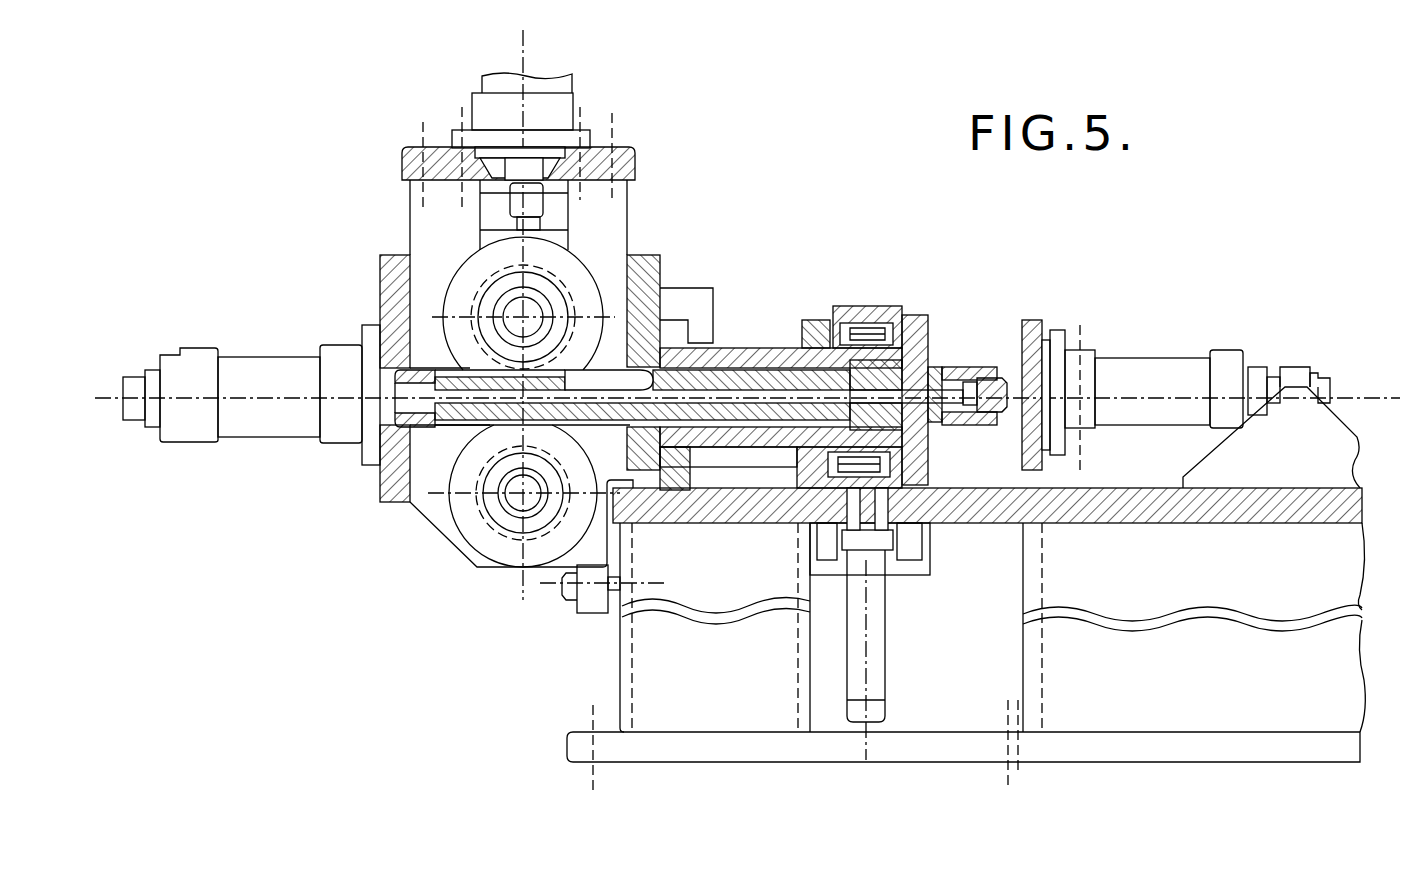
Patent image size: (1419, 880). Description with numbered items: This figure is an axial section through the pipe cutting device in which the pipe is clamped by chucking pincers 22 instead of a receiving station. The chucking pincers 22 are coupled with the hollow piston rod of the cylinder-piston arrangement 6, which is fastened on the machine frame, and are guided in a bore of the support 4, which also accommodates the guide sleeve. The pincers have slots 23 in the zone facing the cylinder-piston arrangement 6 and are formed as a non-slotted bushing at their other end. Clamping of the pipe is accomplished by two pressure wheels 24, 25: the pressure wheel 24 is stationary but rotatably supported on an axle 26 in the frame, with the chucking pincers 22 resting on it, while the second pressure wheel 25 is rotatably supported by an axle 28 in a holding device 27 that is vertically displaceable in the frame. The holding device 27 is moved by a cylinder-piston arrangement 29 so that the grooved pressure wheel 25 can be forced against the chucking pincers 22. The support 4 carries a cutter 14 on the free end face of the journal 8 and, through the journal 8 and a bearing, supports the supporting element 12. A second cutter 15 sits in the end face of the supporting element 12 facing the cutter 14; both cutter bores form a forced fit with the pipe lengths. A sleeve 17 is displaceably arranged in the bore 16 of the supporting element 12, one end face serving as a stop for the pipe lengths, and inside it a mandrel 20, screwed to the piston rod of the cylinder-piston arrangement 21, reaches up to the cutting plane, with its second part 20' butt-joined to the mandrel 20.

The support 4 is at (783, 348).
The cylinder-piston arrangement 6 is at (240, 357).
The journal 8 is at (880, 335).
The supporting element 12 is at (1067, 330).
The cutter 14 is at (895, 358).
The cutter 15 is at (933, 365).
The bore 16 is at (963, 368).
The sleeve 17 is at (1000, 380).
The mandrel 20 is at (860, 343).
The second part of the mandrel 20' is at (922, 330).
The cylinder-piston arrangement 21 is at (1170, 358).
The chucking pincers 22 is at (758, 370).
The slots 23 is at (603, 366).
The pressure wheel 24 is at (500, 552).
The pressure wheel 25 is at (453, 318).
The axle 26 is at (523, 493).
The holding device 27 is at (415, 213).
The axle 28 is at (523, 318).
The cylinder-piston arrangement 29 is at (472, 100).